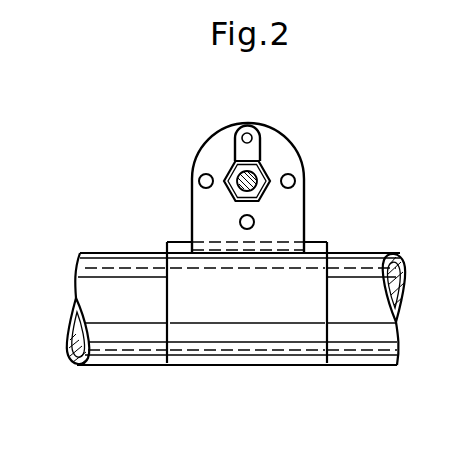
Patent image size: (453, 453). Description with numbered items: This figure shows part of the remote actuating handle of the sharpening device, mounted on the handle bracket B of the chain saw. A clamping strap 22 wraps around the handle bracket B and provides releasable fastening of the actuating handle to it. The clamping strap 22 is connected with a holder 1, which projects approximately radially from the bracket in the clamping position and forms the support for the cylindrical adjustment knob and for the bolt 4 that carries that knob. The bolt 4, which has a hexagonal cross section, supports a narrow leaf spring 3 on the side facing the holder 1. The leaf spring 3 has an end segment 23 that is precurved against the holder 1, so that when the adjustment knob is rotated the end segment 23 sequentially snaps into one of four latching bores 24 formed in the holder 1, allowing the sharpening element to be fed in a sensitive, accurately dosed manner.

The holder 1 is at (275, 145).
The leaf spring 3 is at (238, 152).
The end segment 23 is at (246, 133).
The bolt 4 is at (257, 178).
The latching bores 24 is at (200, 181).
The clamping strap 22 is at (247, 343).
The handle bracket B is at (363, 338).